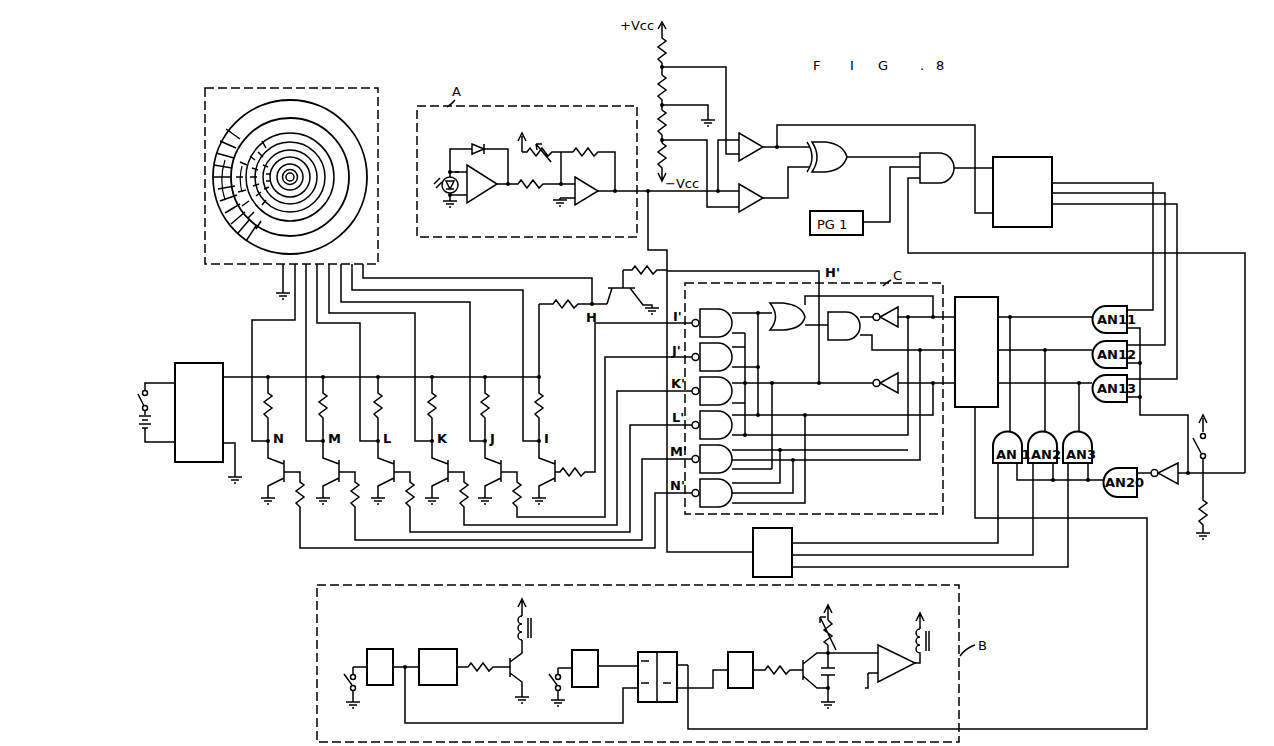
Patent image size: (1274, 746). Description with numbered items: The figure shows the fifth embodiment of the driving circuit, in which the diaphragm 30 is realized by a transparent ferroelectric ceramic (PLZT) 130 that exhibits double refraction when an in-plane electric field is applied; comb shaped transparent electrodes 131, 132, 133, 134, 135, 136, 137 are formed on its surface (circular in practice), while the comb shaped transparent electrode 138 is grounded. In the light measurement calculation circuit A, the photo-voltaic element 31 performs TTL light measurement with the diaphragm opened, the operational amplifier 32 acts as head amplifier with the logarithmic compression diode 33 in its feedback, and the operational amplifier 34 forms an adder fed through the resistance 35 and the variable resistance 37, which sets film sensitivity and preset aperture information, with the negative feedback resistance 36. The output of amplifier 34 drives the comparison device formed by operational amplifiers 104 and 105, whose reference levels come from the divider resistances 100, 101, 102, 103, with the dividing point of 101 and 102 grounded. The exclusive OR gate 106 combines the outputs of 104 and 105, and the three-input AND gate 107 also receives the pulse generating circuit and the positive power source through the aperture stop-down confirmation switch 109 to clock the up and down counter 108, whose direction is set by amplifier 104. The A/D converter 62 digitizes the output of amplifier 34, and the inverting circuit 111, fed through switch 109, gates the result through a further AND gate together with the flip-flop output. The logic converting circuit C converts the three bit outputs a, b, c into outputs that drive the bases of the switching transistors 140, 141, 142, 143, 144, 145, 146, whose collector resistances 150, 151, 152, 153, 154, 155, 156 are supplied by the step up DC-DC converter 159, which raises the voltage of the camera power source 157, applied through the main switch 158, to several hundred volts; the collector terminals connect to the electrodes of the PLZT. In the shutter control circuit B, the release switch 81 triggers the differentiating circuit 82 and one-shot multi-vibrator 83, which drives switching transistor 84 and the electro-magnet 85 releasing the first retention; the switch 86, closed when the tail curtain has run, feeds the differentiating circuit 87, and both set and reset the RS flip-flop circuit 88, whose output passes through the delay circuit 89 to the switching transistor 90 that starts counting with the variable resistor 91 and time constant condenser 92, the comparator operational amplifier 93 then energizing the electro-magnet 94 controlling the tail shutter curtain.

The transparent ferroelectric ceramic (PLZT) 130 is at (205, 220).
The comb shaped transparent electrode 131 is at (360, 200).
The comb shaped transparent electrode 132 is at (350, 176).
The comb shaped transparent electrode 133 is at (338, 165).
The comb shaped transparent electrode 134 is at (332, 152).
The comb shaped transparent electrode 135 is at (318, 157).
The comb shaped transparent electrode 136 is at (306, 160).
The comb shaped transparent electrode 137 is at (291, 165).
The comb shaped transparent electrode 138 is at (283, 168).
The photo-voltaic element (SPC) 31 is at (441, 184).
The operational amplifier 32 is at (485, 195).
The diode 33 is at (478, 144).
The operational amplifier 34 is at (584, 200).
The resistance 35 is at (531, 188).
The negative feedback resistance 36 is at (587, 150).
The variable resistance 37 is at (554, 147).
The resistance 100 is at (670, 48).
The resistance 101 is at (670, 86).
The resistance 102 is at (670, 120).
The resistance 103 is at (670, 154).
The operational amplifier 104 is at (756, 127).
The operational amplifier 105 is at (755, 192).
The exclusive OR gate 106 is at (827, 157).
The AND gate 107 is at (937, 168).
The up and down counter 108 is at (1027, 160).
The diaphragm 30 is at (970, 298).
The switching transistor 140 is at (636, 290).
The collector resistance 150 is at (566, 308).
The switching transistor 141 is at (557, 456).
The switching transistor 142 is at (503, 456).
The switching transistor 143 is at (450, 456).
The switching transistor 144 is at (396, 456).
The switching transistor 145 is at (341, 456).
The switching transistor 146 is at (286, 456).
The collector resistance 151 is at (554, 372).
The collector resistance 152 is at (500, 409).
The collector resistance 153 is at (447, 409).
The collector resistance 154 is at (393, 409).
The collector resistance 155 is at (338, 409).
The collector resistance 156 is at (283, 409).
The power source 157 is at (144, 432).
The main switch 158 is at (143, 390).
The step up DC-DC converter 159 is at (206, 367).
The A/D converter 62 is at (791, 574).
The switch 81 is at (348, 693).
The differentiating circuit 82 is at (382, 686).
The one-shot multi-vibrator 83 is at (443, 686).
The switching transistor 84 is at (511, 676).
The electro-magnet 85 is at (533, 627).
The switch 86 is at (556, 694).
The differentiating circuit 87 is at (585, 650).
The RS flip-flop circuit 88 is at (653, 652).
The delay circuit 89 is at (745, 652).
The switching transistor 90 is at (801, 683).
The variable resistor 91 is at (835, 636).
The time constant condenser 92 is at (836, 675).
The operational amplifier 93 is at (900, 680).
The electro-magnet 94 is at (916, 640).
The aperture stop-down confirmation switch 109 is at (1205, 445).
The inverting circuit 111 is at (1173, 487).